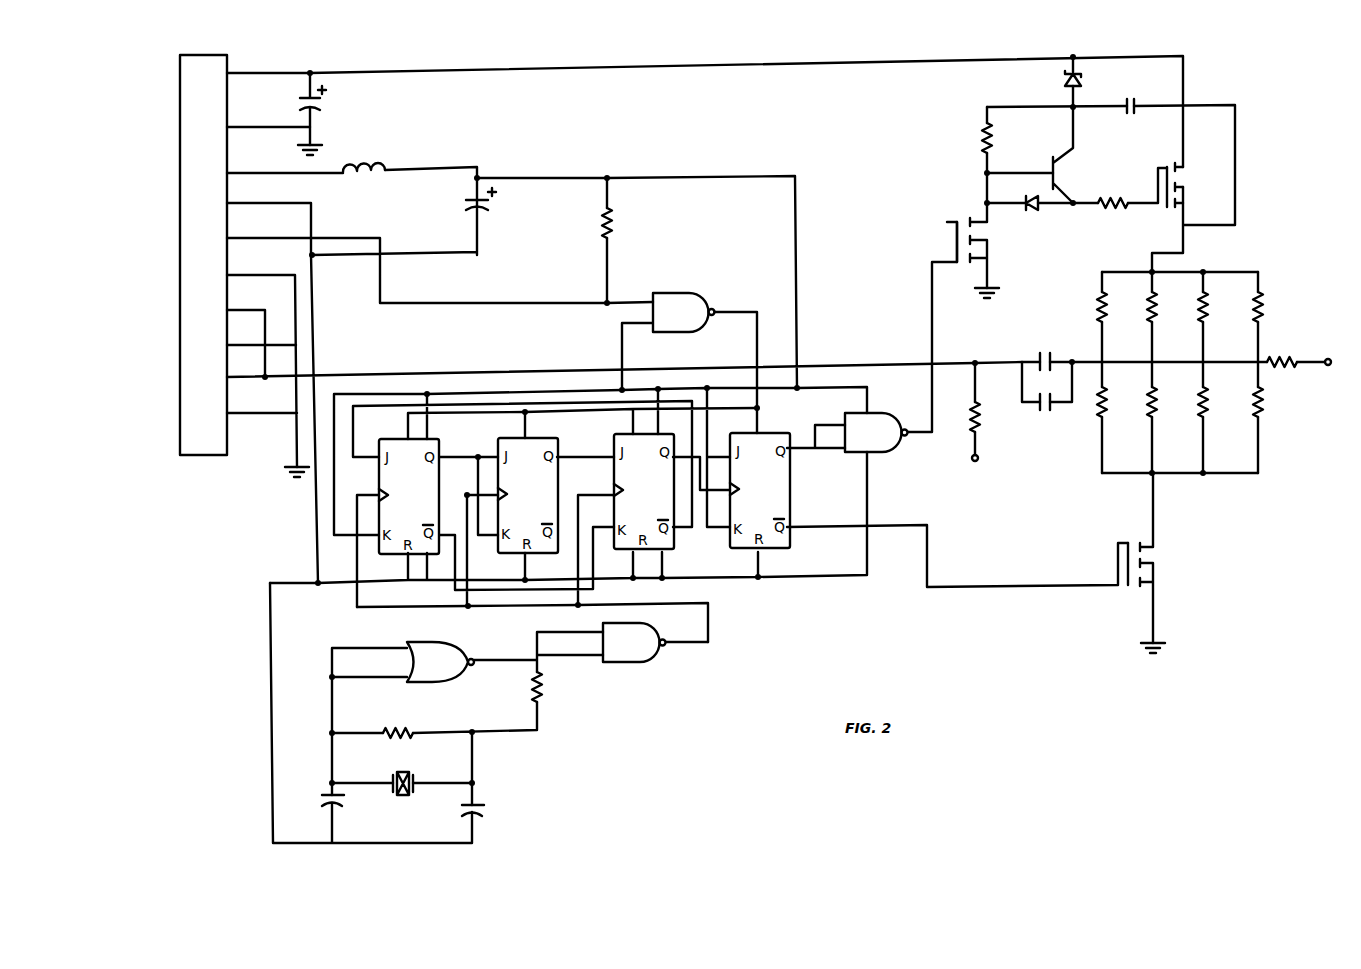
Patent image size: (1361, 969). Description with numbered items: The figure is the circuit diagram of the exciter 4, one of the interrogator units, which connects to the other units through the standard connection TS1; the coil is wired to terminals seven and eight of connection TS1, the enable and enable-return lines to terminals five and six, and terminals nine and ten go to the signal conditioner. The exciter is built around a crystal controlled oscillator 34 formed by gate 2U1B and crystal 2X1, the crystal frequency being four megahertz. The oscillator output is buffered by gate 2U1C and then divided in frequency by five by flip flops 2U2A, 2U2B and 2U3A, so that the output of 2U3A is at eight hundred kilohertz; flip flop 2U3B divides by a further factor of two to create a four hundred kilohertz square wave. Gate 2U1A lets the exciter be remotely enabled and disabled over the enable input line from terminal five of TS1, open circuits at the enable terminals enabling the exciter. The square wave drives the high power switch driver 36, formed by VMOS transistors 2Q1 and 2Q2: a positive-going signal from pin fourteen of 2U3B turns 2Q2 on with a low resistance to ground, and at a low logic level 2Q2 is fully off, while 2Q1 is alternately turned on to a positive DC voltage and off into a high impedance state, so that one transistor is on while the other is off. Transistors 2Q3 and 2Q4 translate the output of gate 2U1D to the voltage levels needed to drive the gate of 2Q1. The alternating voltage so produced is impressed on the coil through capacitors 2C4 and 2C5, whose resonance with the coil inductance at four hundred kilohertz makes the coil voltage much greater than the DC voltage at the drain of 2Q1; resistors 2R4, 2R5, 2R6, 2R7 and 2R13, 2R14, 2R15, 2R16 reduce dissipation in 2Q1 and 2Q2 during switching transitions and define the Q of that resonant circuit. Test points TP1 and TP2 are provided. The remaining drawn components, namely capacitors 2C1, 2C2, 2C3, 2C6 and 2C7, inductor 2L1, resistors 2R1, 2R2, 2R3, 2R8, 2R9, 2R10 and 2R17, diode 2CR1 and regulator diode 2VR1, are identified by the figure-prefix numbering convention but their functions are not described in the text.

The standard connection TS1 is at (160, 244).
The capacitor 2C1 is at (286, 100).
The inductor 2L1 is at (361, 166).
The capacitor 6.8 uF 2C2 is at (458, 208).
The resistor 2K 2R3 is at (623, 240).
The gate 2U1A is at (689, 356).
The gate 2U1B is at (439, 656).
The buffer gate 2U1C is at (636, 636).
The gate 2U1D is at (875, 433).
The flip flop 2U2A is at (407, 495).
The flip flop 2U2B is at (519, 495).
The flip flop 2U3A is at (643, 493).
The flip flop 2U3B is at (761, 492).
The resistor 3K 2R1 is at (552, 689).
The resistor 10M 2R2 is at (385, 723).
The crystal 2X1 is at (404, 794).
The capacitor 30 pF 2C6 is at (311, 795).
The capacitor 30 pF 2C7 is at (490, 805).
The transistor 2Q4 is at (972, 225).
The resistor 3.6K 2R9 is at (961, 132).
The transistor 2Q3 is at (1072, 155).
The diode 2CR1 is at (1018, 194).
The resistor 620 2R10 is at (1114, 202).
The zener diode 12V 2VR1 is at (1091, 78).
The capacitor 1000 pF 2C3 is at (1133, 105).
The VMOS transistor 2Q1 is at (1181, 183).
The VMOS transistor 2Q2 is at (1143, 563).
The high power switch driver 36 is at (936, 190).
The resistor 2R13 is at (1119, 317).
The resistor 2R14 is at (1170, 317).
The resistor 2R15 is at (1220, 317).
The resistor 2R16 is at (1276, 317).
The resistor 2R4 is at (1117, 417).
The resistor 2R5 is at (1167, 417).
The resistor 2R6 is at (1218, 417).
The resistor 2R7 is at (1275, 417).
The resistor 3K 2R17 is at (1281, 354).
The test point TP2 is at (1316, 351).
The resistor 3K 2R8 is at (991, 420).
The test point TP1 is at (974, 470).
The capacitor 2C5 is at (1031, 353).
The capacitor 2C4 is at (1041, 396).
The crystal controlled oscillator 34 is at (520, 756).
The exciter 4 is at (795, 626).